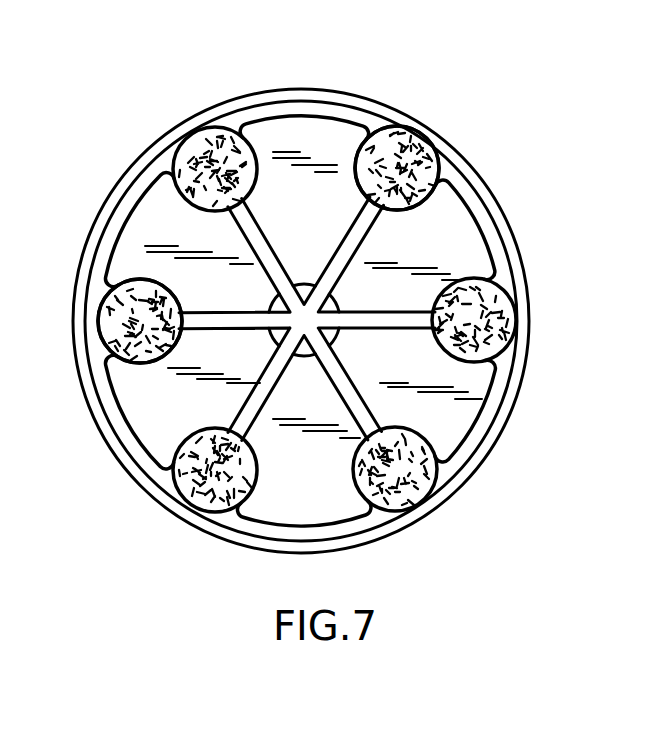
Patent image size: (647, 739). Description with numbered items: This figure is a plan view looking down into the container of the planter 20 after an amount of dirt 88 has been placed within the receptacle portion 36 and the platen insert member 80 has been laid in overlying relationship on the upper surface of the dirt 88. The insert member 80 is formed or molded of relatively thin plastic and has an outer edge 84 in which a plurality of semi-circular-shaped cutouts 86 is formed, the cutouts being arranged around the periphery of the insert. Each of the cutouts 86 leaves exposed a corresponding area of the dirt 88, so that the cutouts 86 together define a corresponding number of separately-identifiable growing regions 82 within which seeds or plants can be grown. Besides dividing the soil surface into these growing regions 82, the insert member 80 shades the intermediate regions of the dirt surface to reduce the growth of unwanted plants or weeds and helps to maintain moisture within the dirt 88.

The planter 20 is at (527, 253).
The receptacle portion 36 is at (527, 376).
The platen insert member 80 is at (316, 142).
The growing regions 82 is at (200, 140).
The outer edge 84 is at (121, 428).
The semi-circular-shaped cutouts 86 is at (233, 124).
The dirt 88 is at (383, 143).